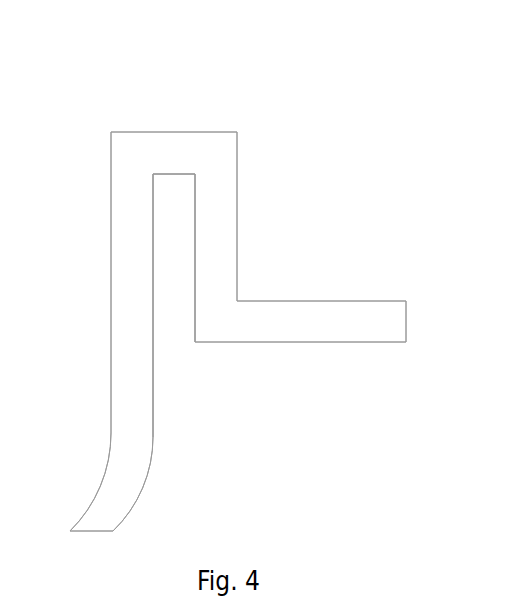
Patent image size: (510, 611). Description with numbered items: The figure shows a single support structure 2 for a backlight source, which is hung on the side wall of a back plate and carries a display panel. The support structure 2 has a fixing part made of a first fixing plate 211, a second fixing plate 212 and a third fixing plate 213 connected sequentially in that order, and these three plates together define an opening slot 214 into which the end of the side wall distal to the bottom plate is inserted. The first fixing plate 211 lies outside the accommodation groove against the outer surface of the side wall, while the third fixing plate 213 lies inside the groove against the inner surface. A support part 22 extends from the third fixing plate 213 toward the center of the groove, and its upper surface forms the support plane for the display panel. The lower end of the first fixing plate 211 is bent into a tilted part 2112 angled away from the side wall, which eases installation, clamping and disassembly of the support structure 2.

The support structure 2 is at (196, 74).
The support part 22 is at (286, 326).
The first fixing plate 211 is at (133, 340).
The second fixing plate 212 is at (175, 155).
The third fixing plate 213 is at (221, 252).
The opening slot 214 is at (168, 287).
The tilted part 2112 is at (116, 507).